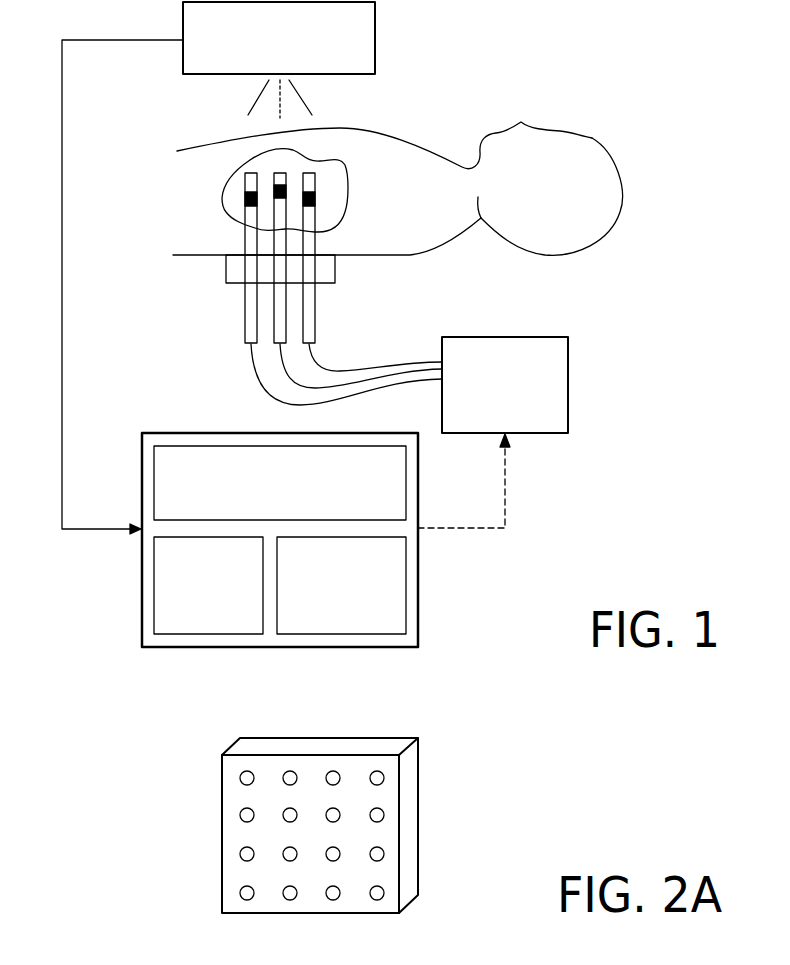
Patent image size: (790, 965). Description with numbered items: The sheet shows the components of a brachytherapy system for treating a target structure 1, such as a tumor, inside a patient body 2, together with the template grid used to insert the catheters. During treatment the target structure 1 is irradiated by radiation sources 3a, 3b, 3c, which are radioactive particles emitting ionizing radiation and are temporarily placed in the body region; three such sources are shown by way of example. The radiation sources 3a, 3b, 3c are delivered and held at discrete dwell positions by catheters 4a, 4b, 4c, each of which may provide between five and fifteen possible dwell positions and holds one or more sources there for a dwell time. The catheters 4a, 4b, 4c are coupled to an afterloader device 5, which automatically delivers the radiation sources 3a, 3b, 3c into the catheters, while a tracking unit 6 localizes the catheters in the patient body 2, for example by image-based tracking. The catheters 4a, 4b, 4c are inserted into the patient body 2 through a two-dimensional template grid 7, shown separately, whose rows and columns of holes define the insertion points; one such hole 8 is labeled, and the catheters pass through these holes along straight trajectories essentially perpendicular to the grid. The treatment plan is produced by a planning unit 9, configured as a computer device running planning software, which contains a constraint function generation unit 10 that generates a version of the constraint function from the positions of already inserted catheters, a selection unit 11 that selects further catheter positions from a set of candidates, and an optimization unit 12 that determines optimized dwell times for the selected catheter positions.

In FIG. 1, the target structure 1 is at (342, 171).
In FIG. 1, the patient body 2 is at (593, 138).
In FIG. 1, the radiation source 3a is at (246, 197).
In FIG. 1, the radiation source 3b is at (280, 186).
In FIG. 1, the radiation source 3c is at (315, 199).
In FIG. 1, the catheter 4a is at (246, 323).
In FIG. 1, the catheter 4b is at (274, 336).
In FIG. 1, the catheter 4c is at (316, 315).
In FIG. 1, the afterloader device 5 is at (499, 424).
In FIG. 1, the tracking unit 6 is at (272, 66).
In FIG. 1, the template grid 7 is at (226, 268).
In FIG. 2A, the template grid 7 is at (408, 826).
In FIG. 2A, the hole 8 is at (240, 777).
In FIG. 1, the planning unit 9 is at (141, 581).
In FIG. 1, the constraint function generation unit 10 is at (268, 511).
In FIG. 1, the selection unit 11 is at (195, 626).
In FIG. 1, the optimization unit 12 is at (329, 626).